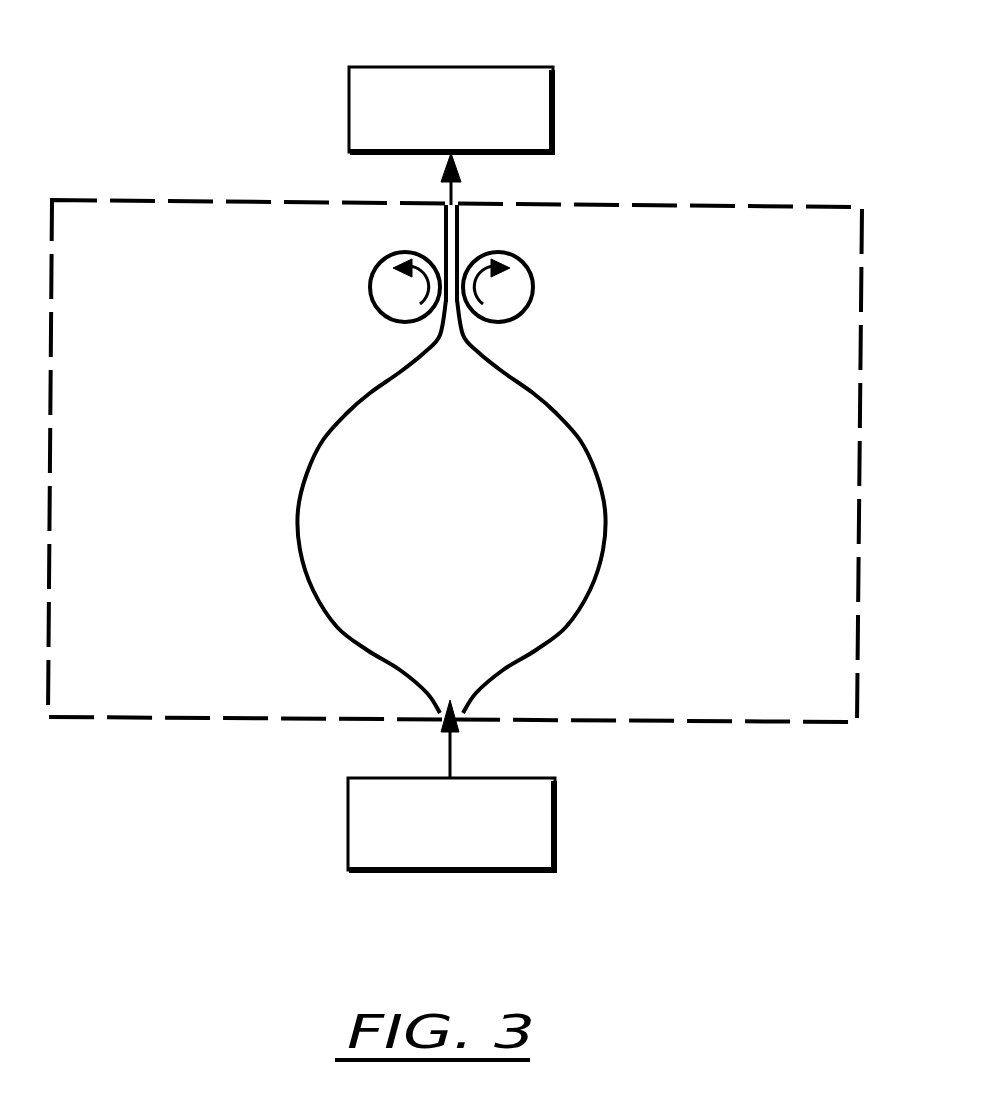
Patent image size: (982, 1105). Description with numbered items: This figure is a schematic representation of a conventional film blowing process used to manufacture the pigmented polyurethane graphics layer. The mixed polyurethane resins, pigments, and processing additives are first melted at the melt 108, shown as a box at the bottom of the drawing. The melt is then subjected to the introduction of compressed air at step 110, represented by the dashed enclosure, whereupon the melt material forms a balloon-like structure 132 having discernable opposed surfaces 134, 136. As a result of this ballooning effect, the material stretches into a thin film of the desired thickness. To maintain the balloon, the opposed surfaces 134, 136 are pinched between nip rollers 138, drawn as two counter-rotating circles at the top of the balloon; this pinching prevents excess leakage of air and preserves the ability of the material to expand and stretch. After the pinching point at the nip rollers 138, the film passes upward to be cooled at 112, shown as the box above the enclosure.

The melt 108 is at (557, 790).
The compressed air introduction step 110 is at (755, 205).
The cooling step 112 is at (510, 67).
The balloon-like structure 132 is at (612, 452).
The opposed surface 134 is at (426, 337).
The opposed surface 136 is at (480, 345).
The nip rollers 138 is at (375, 271).